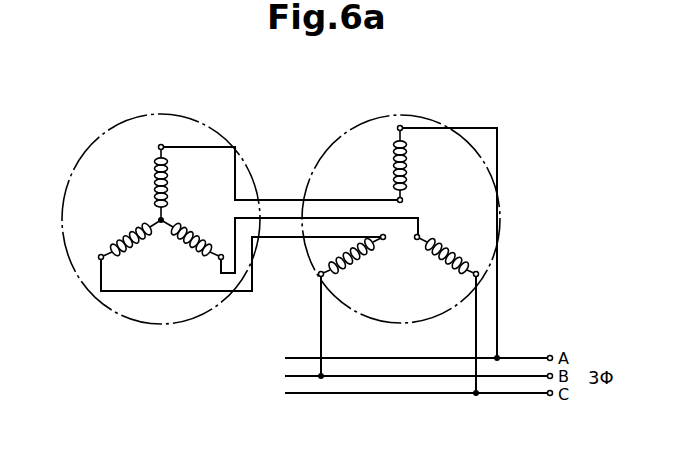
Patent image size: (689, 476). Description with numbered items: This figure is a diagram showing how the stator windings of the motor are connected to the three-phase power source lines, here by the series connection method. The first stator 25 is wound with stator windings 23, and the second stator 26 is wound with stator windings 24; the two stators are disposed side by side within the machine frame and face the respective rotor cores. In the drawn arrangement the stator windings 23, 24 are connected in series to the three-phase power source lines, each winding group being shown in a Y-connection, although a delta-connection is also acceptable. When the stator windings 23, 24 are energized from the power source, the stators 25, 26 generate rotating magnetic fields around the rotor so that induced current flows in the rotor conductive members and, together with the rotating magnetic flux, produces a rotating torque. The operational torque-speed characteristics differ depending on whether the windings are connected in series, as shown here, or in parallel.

The stator windings 23 is at (385, 172).
The stator windings 24 is at (145, 180).
The first stator 25 is at (313, 274).
The second stator 26 is at (133, 321).